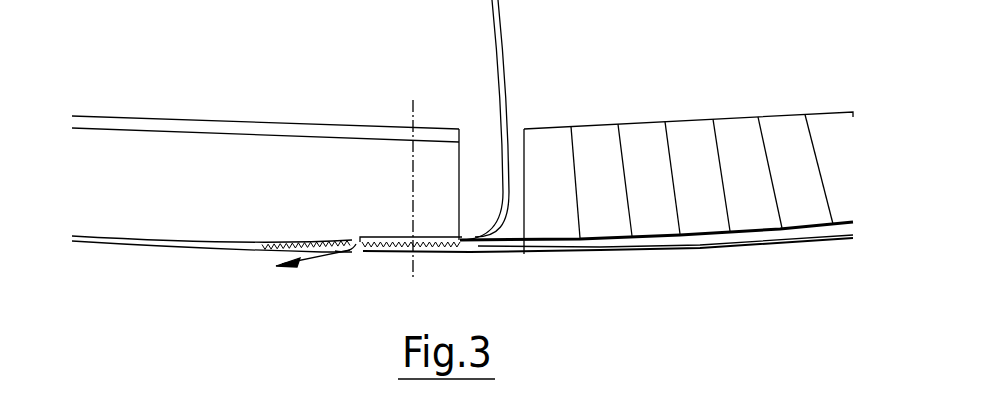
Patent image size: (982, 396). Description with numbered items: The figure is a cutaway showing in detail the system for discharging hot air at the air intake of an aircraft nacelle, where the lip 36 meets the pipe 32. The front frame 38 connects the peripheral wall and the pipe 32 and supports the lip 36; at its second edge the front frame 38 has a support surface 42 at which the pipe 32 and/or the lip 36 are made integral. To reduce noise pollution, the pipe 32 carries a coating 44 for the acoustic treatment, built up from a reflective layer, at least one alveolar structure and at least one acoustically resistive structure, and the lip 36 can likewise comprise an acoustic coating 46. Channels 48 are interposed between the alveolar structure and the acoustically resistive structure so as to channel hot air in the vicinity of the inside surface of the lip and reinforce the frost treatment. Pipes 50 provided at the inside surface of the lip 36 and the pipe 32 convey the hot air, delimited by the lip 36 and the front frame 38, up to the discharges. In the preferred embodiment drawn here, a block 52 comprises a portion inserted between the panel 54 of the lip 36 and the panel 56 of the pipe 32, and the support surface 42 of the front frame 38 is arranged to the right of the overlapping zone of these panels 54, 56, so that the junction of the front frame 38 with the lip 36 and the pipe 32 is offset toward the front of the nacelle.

The pipe 32 is at (225, 250).
The lip 36 is at (755, 247).
The front frame 38 is at (504, 60).
The support surface 42 is at (473, 233).
The coating for the acoustic treatment 44 is at (226, 163).
The acoustic coating 46 is at (725, 145).
The channels 48 is at (662, 248).
The pipes 50 is at (315, 288).
The block 52 is at (333, 240).
The panel of the lip 54 is at (462, 252).
The panel of the pipe 56 is at (358, 237).